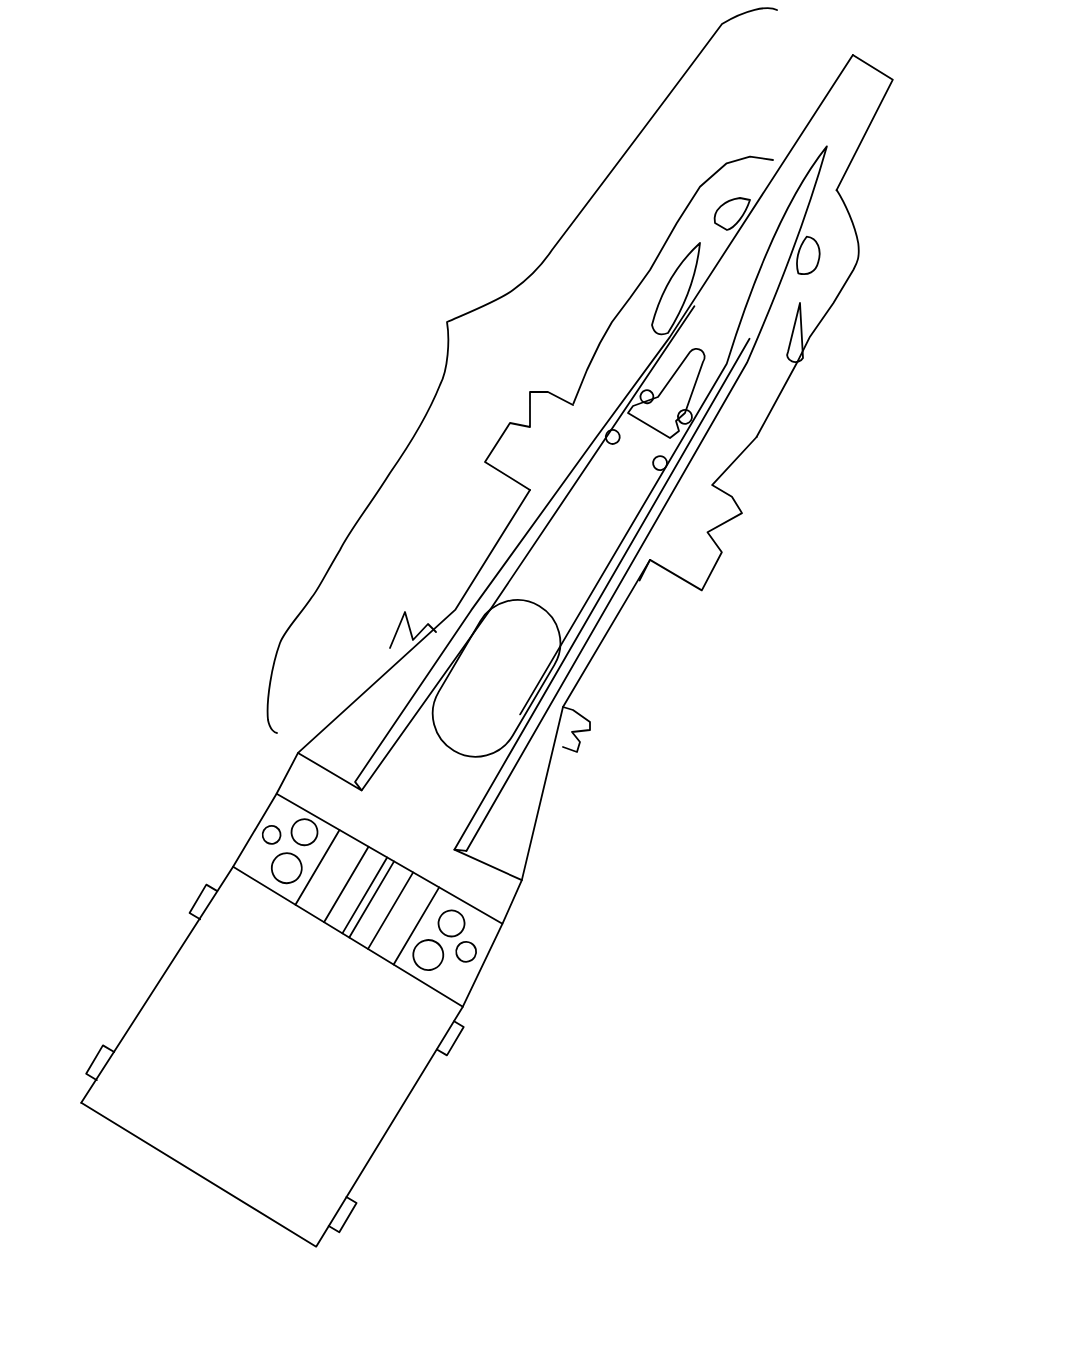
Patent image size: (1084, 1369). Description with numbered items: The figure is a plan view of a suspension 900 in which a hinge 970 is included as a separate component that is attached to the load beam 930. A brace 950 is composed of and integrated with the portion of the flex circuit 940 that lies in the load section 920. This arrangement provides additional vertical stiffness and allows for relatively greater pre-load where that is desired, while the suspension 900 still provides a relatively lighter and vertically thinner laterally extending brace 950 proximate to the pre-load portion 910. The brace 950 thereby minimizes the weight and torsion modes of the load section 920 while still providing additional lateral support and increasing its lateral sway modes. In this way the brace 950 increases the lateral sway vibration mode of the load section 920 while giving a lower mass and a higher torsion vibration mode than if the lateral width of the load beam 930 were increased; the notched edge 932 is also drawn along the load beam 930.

The suspension 900 is at (160, 168).
The pre-load portion 910 is at (234, 768).
The load section 920 is at (522, 370).
The load beam 930 is at (666, 536).
The notched edge 932 is at (757, 440).
The flex circuit 940 is at (741, 534).
The brace 950 is at (357, 693).
The hinge 970 is at (495, 961).